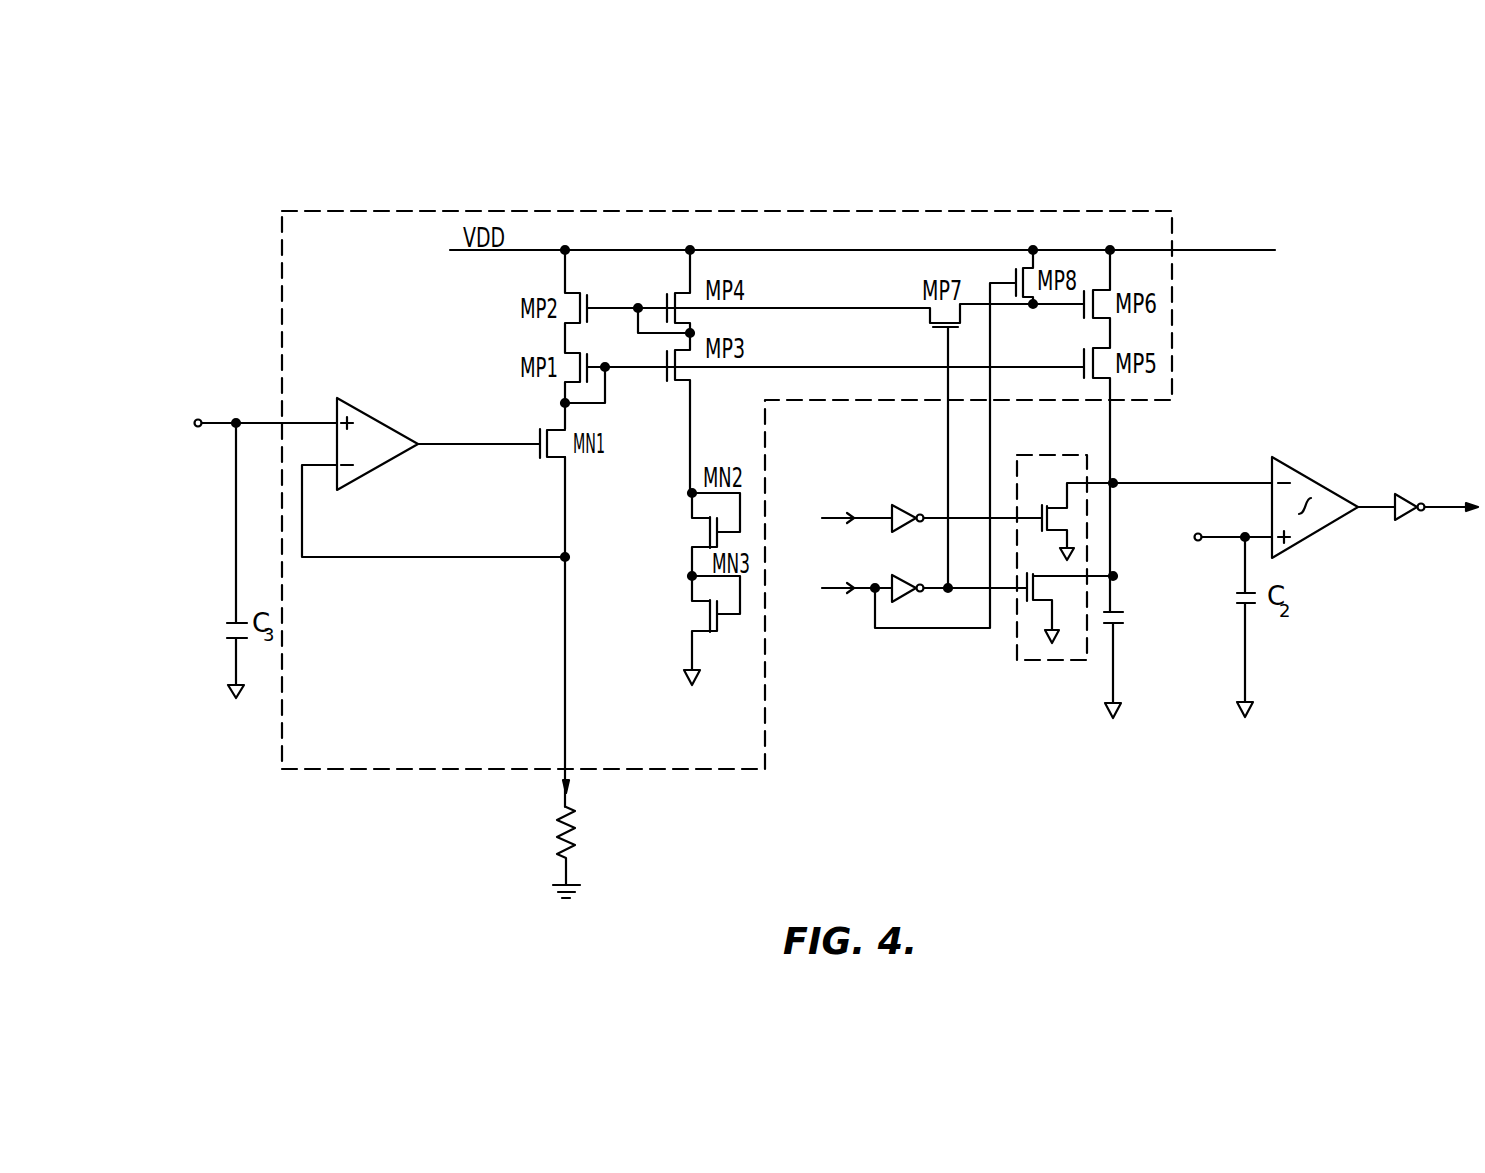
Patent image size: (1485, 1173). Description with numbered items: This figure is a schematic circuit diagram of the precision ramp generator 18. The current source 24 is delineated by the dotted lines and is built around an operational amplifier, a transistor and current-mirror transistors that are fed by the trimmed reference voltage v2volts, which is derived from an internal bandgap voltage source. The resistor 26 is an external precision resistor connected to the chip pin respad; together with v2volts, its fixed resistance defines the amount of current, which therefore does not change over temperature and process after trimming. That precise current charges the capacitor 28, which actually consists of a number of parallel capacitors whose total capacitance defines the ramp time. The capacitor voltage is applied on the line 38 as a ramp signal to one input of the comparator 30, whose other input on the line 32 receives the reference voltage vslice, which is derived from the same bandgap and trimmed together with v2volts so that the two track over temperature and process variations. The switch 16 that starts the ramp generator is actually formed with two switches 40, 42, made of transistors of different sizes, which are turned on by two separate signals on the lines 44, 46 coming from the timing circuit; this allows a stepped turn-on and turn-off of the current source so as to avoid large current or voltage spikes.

The ramp generator circuit 18 is at (236, 208).
The current source 24 is at (1022, 210).
The switch 16 is at (1060, 455).
The resistor 26 is at (558, 833).
The capacitor 28 is at (1118, 627).
The comparator 30 is at (1312, 475).
The line 32 is at (1212, 533).
The line 38 is at (1196, 470).
The switch 40 is at (1060, 521).
The switch 42 is at (1032, 613).
The line 44 is at (918, 508).
The line 46 is at (910, 577).